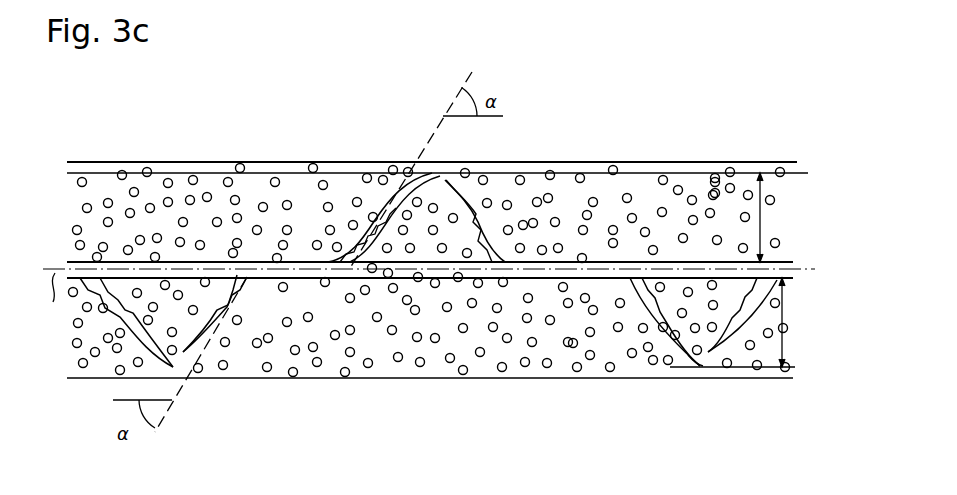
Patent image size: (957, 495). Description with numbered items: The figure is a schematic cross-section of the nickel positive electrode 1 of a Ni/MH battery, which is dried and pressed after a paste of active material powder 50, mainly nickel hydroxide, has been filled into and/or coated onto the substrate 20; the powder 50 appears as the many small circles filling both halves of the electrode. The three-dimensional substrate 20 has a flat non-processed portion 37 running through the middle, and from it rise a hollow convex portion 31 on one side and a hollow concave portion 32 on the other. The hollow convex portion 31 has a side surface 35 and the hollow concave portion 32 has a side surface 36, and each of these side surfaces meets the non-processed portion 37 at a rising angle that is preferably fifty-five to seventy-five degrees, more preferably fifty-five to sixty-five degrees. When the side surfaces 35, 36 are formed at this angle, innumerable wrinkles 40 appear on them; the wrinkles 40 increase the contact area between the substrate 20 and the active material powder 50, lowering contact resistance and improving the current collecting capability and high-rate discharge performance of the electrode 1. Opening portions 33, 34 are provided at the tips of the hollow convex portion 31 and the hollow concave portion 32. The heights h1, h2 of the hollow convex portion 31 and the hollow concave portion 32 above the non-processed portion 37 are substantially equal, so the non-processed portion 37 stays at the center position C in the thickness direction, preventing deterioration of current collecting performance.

The nickel positive electrode 1 is at (127, 162).
The substrate 20 is at (120, 262).
The hollow convex portion 31 is at (465, 202).
The hollow concave portion 32 is at (675, 362).
The opening portion 33 is at (443, 181).
The opening portion 34 is at (703, 358).
The side surface 35 is at (358, 247).
The side surface 36 is at (632, 300).
The non-processed portion 37 is at (300, 278).
The wrinkles 40 is at (368, 230).
The active material powder 50 is at (662, 173).
The center position C is at (48, 301).
The height of the hollow convex portion h1 is at (770, 217).
The height of the hollow concave portion h2 is at (793, 322).